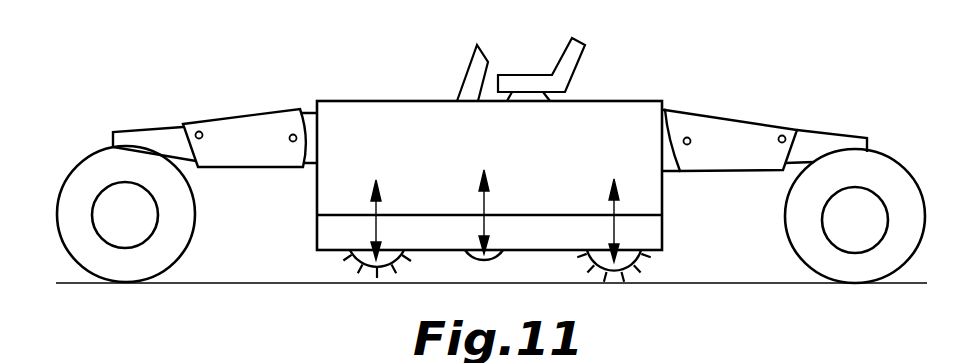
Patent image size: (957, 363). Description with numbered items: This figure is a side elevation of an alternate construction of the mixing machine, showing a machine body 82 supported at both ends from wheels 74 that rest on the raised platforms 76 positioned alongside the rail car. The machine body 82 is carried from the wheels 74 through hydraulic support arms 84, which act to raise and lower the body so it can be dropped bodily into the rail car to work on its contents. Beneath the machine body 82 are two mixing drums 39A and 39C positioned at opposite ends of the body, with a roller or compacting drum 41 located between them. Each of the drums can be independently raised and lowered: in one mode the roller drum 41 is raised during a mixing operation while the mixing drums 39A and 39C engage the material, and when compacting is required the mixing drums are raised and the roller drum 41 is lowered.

The mixing drum 39A is at (350, 268).
The mixing drum 39C is at (603, 272).
The roller or compacting drum 41 is at (484, 260).
The wheels 74 is at (192, 234).
The raised platforms 76 is at (773, 283).
The machine body 82 is at (489, 150).
The hydraulic support arms 84 is at (248, 113).